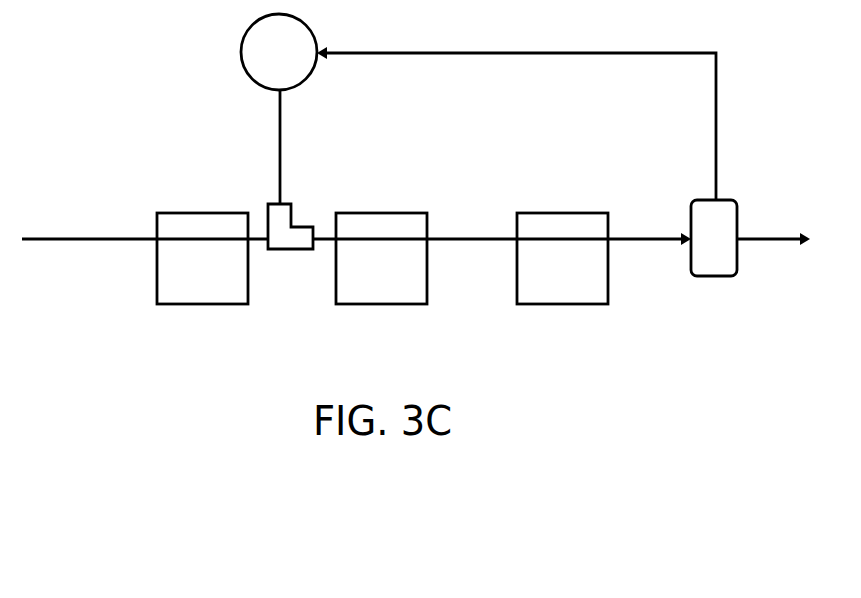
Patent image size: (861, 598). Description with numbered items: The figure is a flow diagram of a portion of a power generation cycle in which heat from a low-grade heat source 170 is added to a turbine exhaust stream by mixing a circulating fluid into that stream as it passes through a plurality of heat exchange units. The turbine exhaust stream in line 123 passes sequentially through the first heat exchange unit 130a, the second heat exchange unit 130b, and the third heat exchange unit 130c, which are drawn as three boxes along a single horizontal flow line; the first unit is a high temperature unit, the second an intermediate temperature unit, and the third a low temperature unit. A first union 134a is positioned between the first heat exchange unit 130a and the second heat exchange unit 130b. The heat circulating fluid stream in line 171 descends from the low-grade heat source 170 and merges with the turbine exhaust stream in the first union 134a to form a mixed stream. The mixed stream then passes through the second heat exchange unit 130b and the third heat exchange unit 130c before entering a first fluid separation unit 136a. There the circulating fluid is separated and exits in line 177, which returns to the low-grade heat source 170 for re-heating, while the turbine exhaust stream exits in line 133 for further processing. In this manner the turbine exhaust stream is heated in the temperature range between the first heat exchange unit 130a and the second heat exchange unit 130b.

The line 123 is at (145, 226).
The first heat exchange unit 130a is at (190, 304).
The second heat exchange unit 130b is at (372, 304).
The third heat exchange unit 130c is at (552, 304).
The first union 134a is at (275, 249).
The first fluid separation unit 136a is at (710, 276).
The low-grade heat source 170 is at (297, 64).
The line 171 is at (300, 147).
The line 177 is at (516, 114).
The line 133 is at (773, 248).